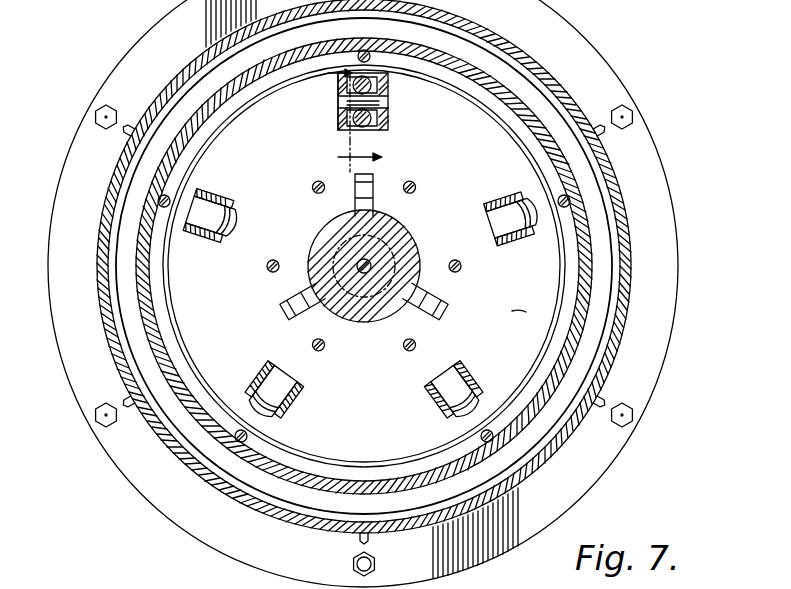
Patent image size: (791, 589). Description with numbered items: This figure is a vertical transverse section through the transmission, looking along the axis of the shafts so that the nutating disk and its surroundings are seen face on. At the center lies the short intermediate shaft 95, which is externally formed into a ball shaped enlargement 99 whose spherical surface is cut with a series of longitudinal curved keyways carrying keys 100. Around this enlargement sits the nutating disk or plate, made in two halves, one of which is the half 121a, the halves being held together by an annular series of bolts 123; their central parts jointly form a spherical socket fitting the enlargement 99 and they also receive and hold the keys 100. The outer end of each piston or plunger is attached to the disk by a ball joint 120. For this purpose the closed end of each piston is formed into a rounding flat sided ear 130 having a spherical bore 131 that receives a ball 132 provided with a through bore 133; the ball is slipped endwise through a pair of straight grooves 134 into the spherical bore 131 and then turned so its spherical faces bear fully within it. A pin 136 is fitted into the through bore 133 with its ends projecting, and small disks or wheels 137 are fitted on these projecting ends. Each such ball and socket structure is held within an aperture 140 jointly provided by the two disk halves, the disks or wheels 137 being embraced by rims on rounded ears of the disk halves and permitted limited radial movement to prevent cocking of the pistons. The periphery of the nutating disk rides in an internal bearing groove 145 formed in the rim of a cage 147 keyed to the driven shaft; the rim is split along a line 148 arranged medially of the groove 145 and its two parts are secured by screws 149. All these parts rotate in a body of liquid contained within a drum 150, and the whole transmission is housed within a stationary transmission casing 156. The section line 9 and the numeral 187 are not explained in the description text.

The section line 9- 9 is at (350, 123).
The intermediate shaft 95 is at (352, 322).
The ball shaped enlargement 99 is at (416, 238).
The keys 100 is at (372, 200).
The ball joint 120 is at (330, 118).
The half of nutating disk 121a is at (501, 310).
The bolts 123 is at (413, 186).
The ear 130 is at (370, 130).
The spherical bore 131 is at (388, 115).
The ball 132 is at (388, 90).
The through bore 133 is at (388, 102).
The straight grooves 134 is at (353, 127).
The pin 136 is at (338, 98).
The disks or wheels 137 is at (338, 122).
The aperture 140 is at (487, 218).
The internal bearing groove 145 is at (470, 100).
The cage 147 is at (577, 223).
The split line 148 is at (443, 72).
The screws 149 is at (365, 49).
The drum 150 is at (590, 308).
The transmission casing 156 is at (100, 276).
The center screw 187 is at (362, 266).